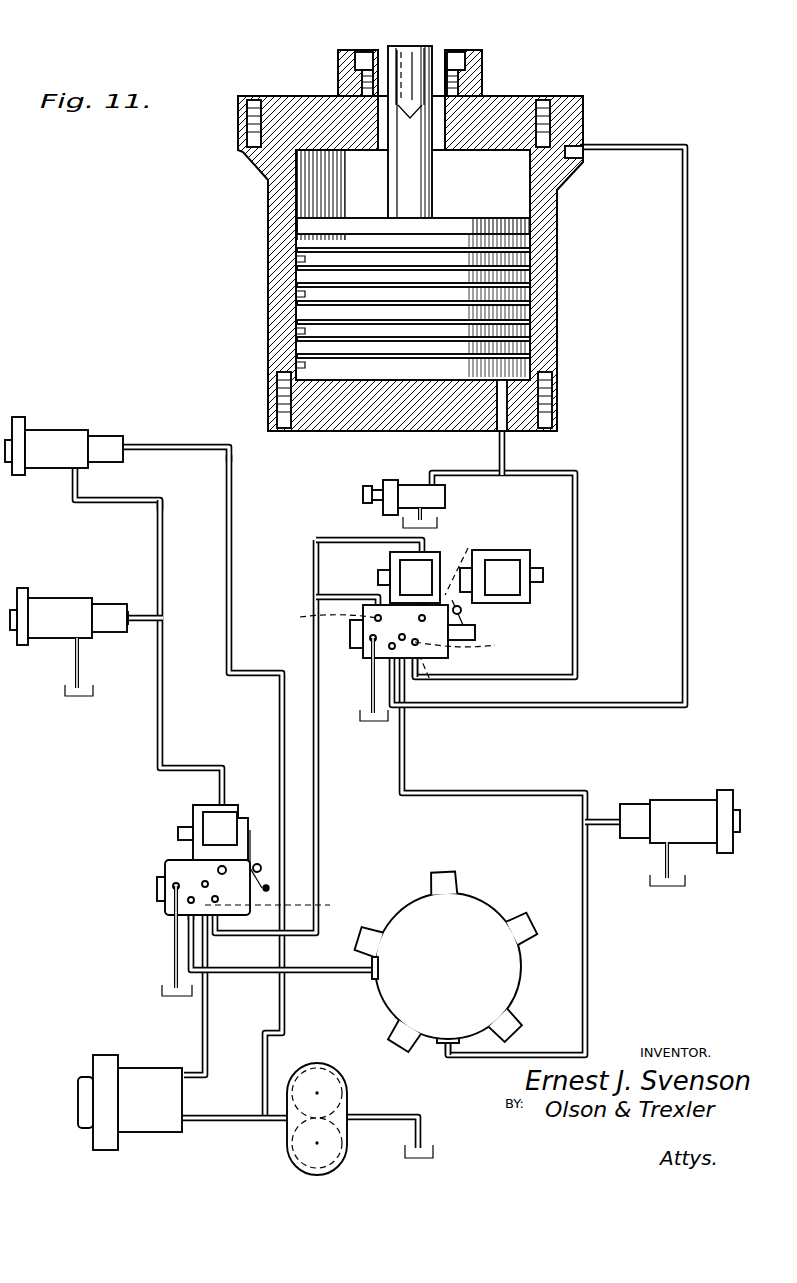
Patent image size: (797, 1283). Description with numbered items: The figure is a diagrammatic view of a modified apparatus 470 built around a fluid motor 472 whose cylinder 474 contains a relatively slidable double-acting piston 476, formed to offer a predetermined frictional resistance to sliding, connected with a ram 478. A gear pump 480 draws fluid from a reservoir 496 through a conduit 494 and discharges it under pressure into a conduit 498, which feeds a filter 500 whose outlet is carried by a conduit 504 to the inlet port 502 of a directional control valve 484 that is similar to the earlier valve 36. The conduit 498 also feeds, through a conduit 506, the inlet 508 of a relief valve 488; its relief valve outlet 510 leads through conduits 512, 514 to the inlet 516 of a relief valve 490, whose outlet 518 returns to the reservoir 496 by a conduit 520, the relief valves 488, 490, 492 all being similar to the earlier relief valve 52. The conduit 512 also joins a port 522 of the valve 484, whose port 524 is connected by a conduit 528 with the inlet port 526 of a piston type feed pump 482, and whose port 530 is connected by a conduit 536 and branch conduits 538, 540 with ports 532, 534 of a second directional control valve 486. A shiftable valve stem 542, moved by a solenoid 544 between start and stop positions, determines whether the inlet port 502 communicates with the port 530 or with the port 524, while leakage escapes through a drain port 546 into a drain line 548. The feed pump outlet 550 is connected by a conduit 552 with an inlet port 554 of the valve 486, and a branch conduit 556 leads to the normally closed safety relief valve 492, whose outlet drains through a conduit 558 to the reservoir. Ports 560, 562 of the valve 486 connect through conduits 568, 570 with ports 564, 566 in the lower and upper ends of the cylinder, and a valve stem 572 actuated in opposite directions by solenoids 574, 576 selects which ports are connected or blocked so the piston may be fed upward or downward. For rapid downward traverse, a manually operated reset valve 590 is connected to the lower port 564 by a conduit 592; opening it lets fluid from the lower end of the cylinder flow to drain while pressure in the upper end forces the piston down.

The directional control valve 36 is at (202, 888).
The relief valve 52 is at (67, 407).
The apparatus 470 is at (356, 247).
The fluid motor 472 is at (270, 285).
The cylinder 474 is at (270, 210).
The double-acting piston 476 is at (540, 298).
The ram 478 is at (433, 178).
The gear pump 480 is at (345, 1105).
The piston type feed pump 482 is at (432, 951).
The directional control valve 484 is at (160, 865).
The directional control valve 486 is at (445, 624).
The relief valve 488 is at (82, 430).
The relief valve 490 is at (60, 600).
The safety relief valve 492 is at (678, 800).
The conduit 494 is at (380, 1120).
The reservoir 496 is at (72, 696).
The conduit 498 is at (240, 1120).
The filter 500 is at (140, 1066).
The inlet port 502 is at (160, 877).
The conduit 504 is at (209, 1015).
The conduit 506 is at (233, 555).
The inlet 508 is at (130, 443).
The relief valve outlet 510 is at (75, 470).
The conduit 512 is at (165, 555).
The conduit 514 is at (137, 615).
The inlet 516 is at (128, 624).
The outlet 518 is at (75, 642).
The conduit 520 is at (93, 688).
The port 522 is at (215, 868).
The port 524 is at (188, 905).
The inlet port 526 is at (370, 985).
The conduit 528 is at (320, 973).
The port 530 is at (288, 903).
The port 532 is at (302, 617).
The port 534 is at (465, 561).
The conduit 536 is at (320, 760).
The branch conduit 538 is at (332, 596).
The branch conduit 540 is at (342, 541).
The valve stem 542 is at (270, 893).
The solenoid 544 is at (193, 820).
The drain port 546 is at (168, 893).
The drain line 548 is at (154, 972).
The outlet 550 is at (452, 1052).
The conduit 552 is at (500, 792).
The inlet port 554 is at (478, 636).
The branch conduit 556 is at (605, 826).
The conduit 558 is at (672, 866).
The port 560 is at (425, 664).
The port 562 is at (372, 665).
The port 564 is at (507, 430).
The port 566 is at (585, 150).
The conduit 568 is at (578, 612).
The conduit 570 is at (688, 523).
The valve stem 572 is at (476, 630).
The solenoid 574 is at (390, 575).
The solenoid 576 is at (545, 565).
The reset valve 590 is at (410, 480).
The conduit 592 is at (468, 472).